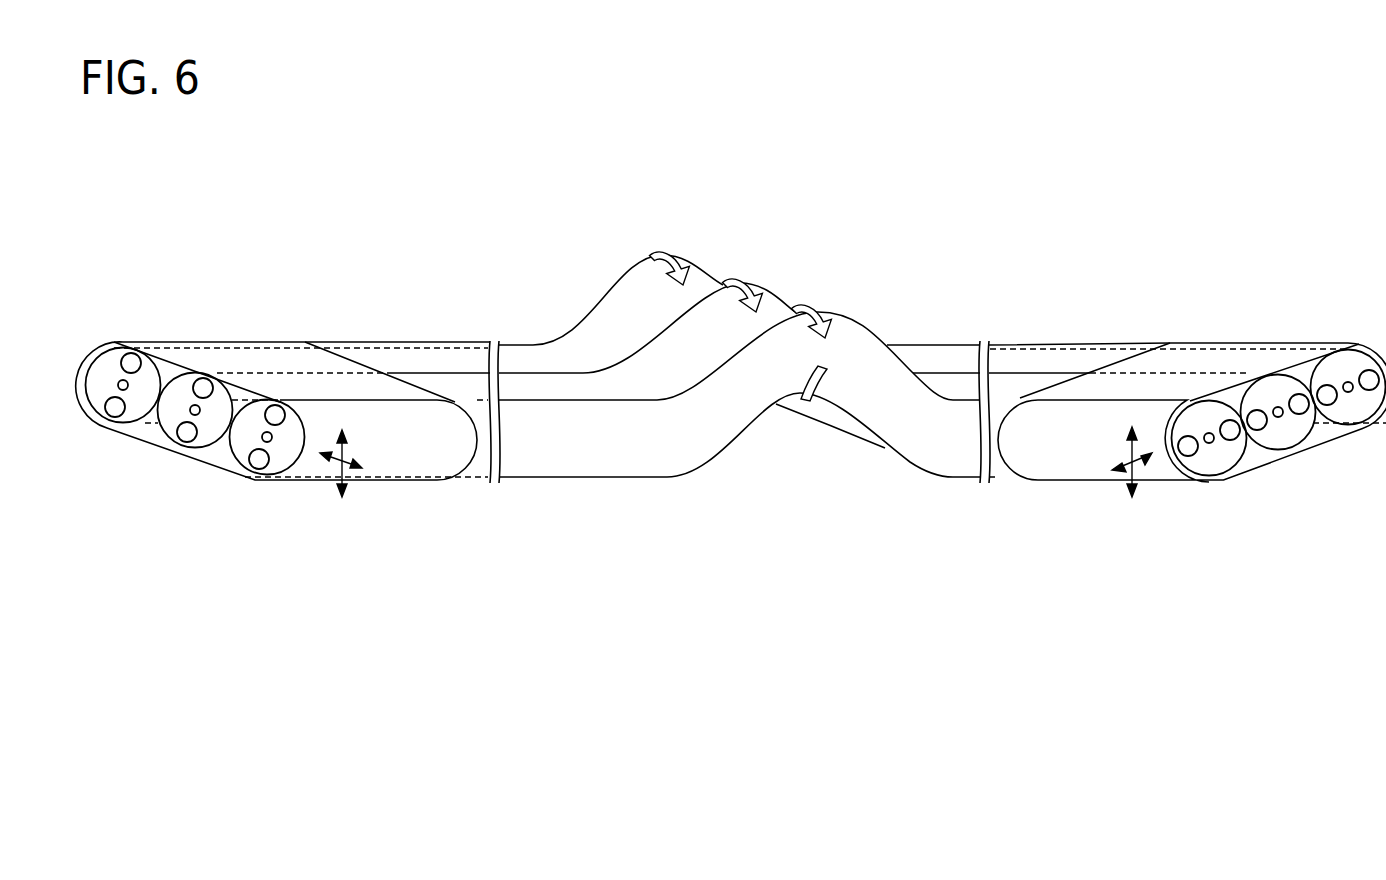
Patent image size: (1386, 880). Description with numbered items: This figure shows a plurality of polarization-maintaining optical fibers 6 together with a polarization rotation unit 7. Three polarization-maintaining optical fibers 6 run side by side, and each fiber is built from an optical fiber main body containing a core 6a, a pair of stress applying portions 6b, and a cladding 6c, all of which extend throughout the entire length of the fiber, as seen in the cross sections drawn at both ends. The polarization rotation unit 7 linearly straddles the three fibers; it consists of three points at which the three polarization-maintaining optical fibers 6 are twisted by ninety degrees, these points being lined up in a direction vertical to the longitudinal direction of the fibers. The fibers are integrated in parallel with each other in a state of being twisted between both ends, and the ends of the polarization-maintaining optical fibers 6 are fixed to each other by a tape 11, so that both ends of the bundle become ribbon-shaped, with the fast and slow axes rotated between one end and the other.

The polarization-maintaining optical fiber 6 is at (437, 352).
The core 6a is at (121, 380).
The stress applying portions 6b is at (133, 353).
The cladding 6c is at (138, 396).
The polarization rotation unit 7 is at (663, 235).
The tape 11 is at (264, 353).